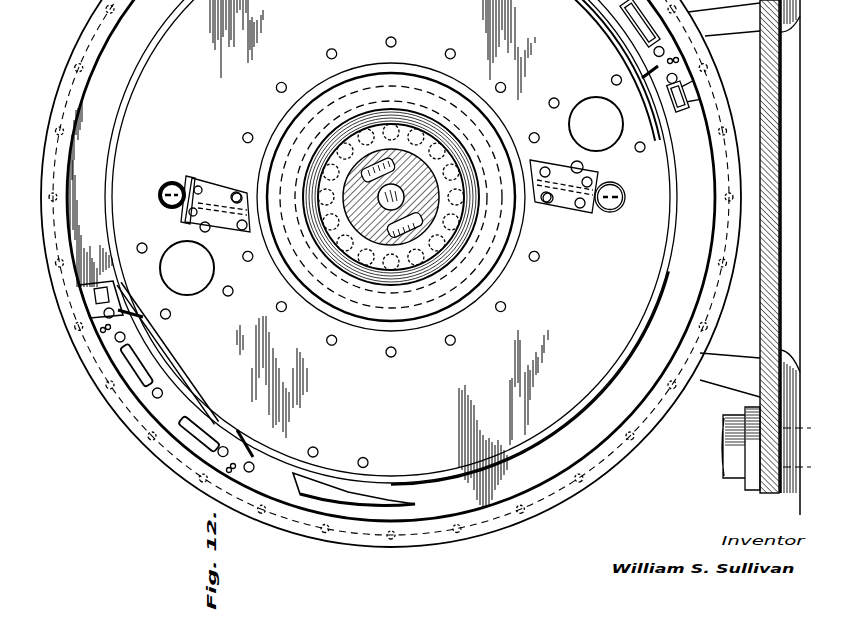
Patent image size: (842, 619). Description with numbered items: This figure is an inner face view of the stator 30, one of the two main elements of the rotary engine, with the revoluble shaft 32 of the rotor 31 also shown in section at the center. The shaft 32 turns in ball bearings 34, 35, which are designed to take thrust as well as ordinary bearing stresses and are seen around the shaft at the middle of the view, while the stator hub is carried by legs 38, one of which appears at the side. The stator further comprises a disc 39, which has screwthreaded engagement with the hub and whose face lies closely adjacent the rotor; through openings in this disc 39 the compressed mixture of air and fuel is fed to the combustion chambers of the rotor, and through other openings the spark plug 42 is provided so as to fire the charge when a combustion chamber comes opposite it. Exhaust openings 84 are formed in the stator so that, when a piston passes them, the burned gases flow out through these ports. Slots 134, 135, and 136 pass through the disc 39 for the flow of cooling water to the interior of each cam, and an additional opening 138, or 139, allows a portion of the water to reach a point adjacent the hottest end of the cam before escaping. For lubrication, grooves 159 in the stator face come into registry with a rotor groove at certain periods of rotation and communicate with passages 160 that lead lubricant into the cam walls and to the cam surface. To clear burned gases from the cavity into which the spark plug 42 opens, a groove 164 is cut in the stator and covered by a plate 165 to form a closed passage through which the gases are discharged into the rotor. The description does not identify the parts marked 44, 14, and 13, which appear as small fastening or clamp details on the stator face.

The stator 30 is at (90, 28).
The disc 39 is at (588, 452).
The ball bearing 34 is at (343, 128).
The ball bearing 35 is at (366, 197).
The revoluble shaft 32 is at (438, 192).
The rotor 31 is at (424, 224).
The clamp plate 44 is at (198, 188).
The clamp strip 14 is at (186, 228).
The plate 165 is at (562, 204).
The groove 164 is at (571, 206).
The spark plug 42 is at (616, 200).
The slot 136 is at (140, 363).
The slot 135 is at (210, 425).
The opening 138 is at (106, 288).
The bolt 13 is at (226, 385).
The exhaust opening 84 is at (330, 489).
The groove 159 is at (606, 5).
The slot 134 is at (632, 30).
The opening 139 is at (683, 100).
The passage 160 is at (644, 80).
The leg 38 is at (738, 370).